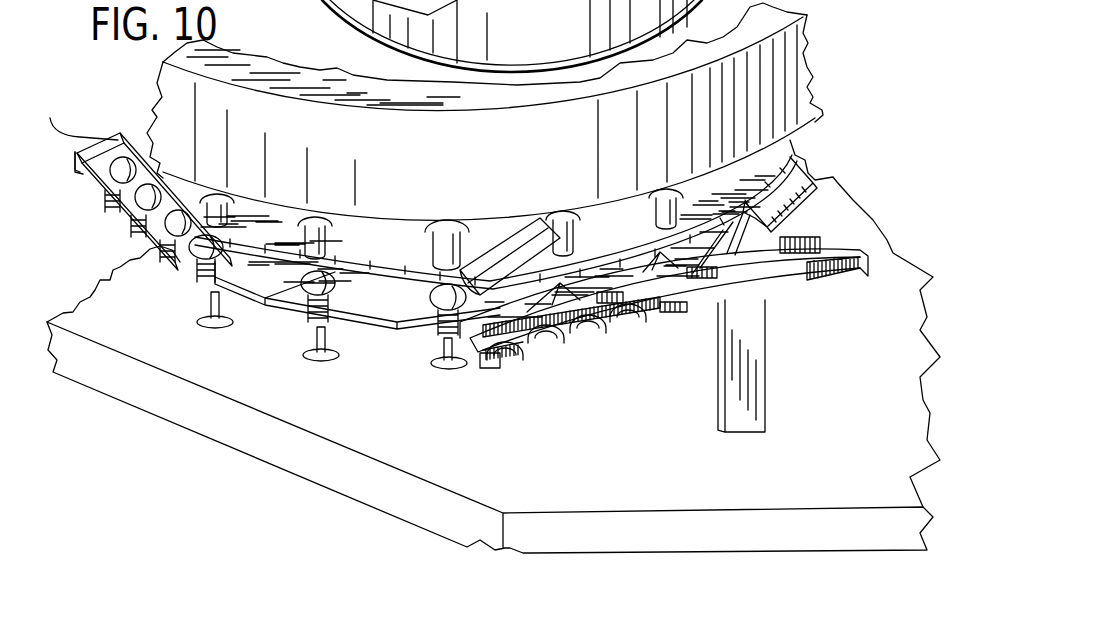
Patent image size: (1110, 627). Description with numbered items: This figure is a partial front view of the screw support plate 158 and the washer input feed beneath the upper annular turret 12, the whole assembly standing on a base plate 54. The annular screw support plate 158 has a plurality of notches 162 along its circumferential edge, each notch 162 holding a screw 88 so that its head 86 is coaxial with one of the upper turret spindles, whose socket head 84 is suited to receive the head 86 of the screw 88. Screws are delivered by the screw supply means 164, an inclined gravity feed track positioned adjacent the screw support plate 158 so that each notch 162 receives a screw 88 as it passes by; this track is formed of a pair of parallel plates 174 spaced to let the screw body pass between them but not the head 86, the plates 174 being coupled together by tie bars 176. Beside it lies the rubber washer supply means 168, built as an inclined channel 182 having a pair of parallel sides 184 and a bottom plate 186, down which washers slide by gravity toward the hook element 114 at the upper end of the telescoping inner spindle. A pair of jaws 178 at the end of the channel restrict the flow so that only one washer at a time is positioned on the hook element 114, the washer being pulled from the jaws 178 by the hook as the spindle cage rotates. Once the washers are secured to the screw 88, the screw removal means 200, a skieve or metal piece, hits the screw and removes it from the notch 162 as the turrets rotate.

The upper annular turret 12 is at (790, 68).
The base plate 54 is at (413, 443).
The socket head 84 is at (443, 250).
The head 86 is at (432, 300).
The screw 88 is at (308, 311).
The hook element 114 is at (203, 305).
The annular screw support plate 158 is at (815, 190).
The notch 162 is at (188, 266).
The screw supply means 164 is at (105, 126).
The rubber washer supply means 168 is at (824, 359).
The plates 174 is at (77, 115).
The tie bars 176 is at (76, 166).
The jaws 178 is at (505, 365).
The channel 182 is at (839, 293).
The parallel sides 184 is at (840, 252).
The bottom plate 186 is at (793, 260).
The screw removal means 200 is at (507, 240).